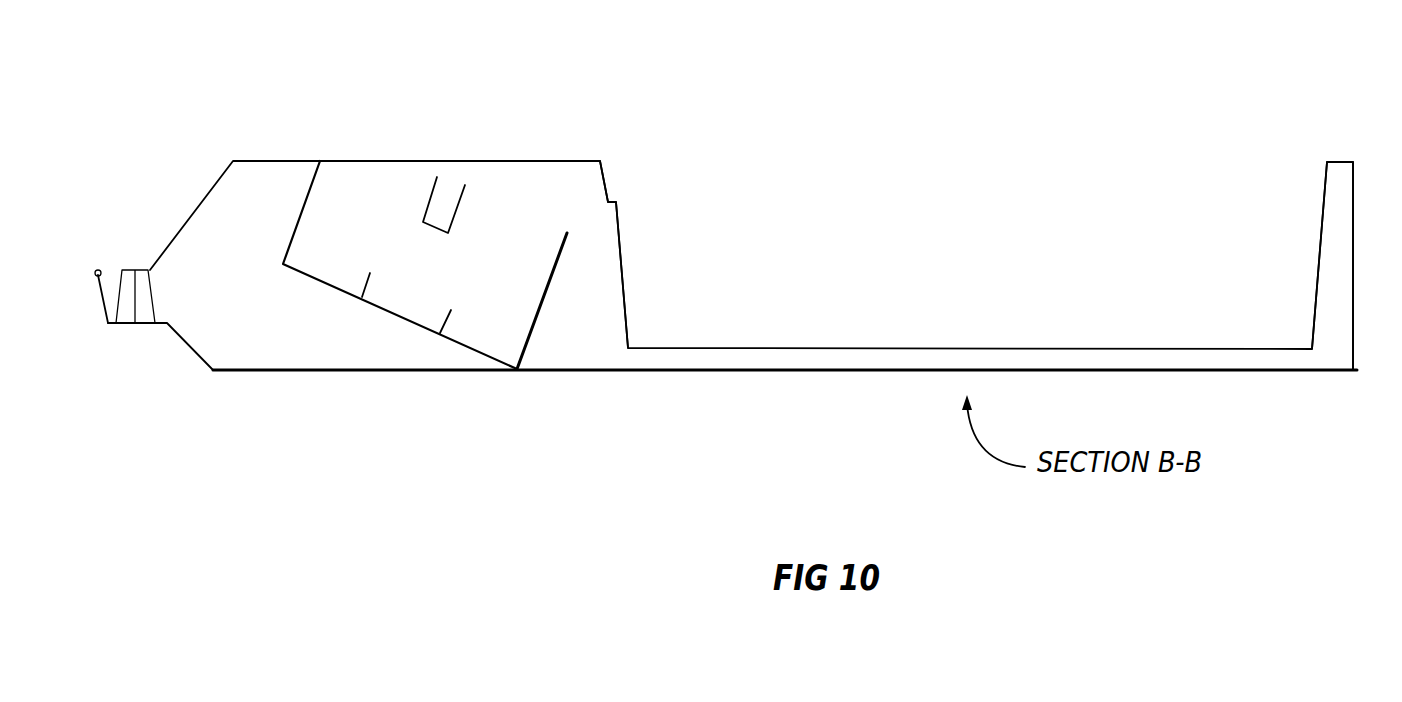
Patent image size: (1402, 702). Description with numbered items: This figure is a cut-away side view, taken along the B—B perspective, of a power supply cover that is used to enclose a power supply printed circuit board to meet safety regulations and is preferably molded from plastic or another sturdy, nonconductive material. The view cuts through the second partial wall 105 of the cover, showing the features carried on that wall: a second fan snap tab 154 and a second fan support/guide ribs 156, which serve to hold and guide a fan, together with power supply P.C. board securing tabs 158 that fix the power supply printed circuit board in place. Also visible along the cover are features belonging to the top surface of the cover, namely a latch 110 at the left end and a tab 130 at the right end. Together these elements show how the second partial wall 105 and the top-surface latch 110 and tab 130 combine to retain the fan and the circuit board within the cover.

The second partial wall 105 is at (273, 178).
The latch 110 is at (94, 272).
The tab 130 is at (1368, 374).
The second fan snap tab 154 is at (435, 177).
The second fan support/guide ribs 156 is at (337, 277).
The power supply P.C. board securing tabs 158 is at (610, 177).